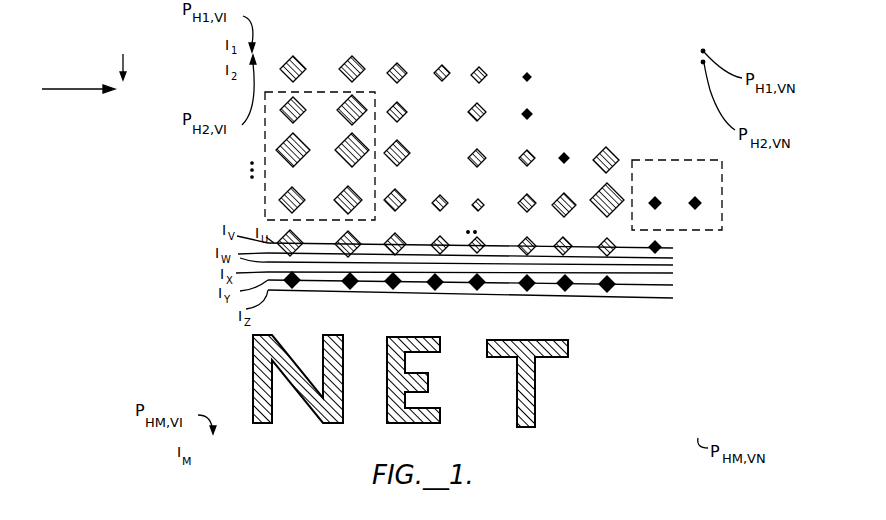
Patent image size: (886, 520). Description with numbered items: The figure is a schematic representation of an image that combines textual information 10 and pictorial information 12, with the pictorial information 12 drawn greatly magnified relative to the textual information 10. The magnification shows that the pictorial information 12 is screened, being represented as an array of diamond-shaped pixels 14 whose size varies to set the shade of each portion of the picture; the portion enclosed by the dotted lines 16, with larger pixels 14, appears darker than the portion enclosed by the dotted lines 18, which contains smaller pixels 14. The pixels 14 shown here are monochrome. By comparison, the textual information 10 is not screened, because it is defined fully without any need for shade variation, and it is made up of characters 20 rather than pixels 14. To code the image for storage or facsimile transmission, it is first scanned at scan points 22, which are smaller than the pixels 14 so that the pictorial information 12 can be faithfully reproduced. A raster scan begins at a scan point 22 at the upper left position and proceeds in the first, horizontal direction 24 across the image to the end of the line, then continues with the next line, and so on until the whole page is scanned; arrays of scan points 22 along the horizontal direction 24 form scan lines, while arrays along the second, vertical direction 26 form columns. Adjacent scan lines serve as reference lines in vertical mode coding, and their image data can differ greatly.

The textual information 10 is at (605, 388).
The pictorial information 12 is at (616, 125).
The pixels 14 is at (486, 73).
The dotted lines 16 is at (267, 218).
The dotted lines 18 is at (722, 203).
The characters 20 is at (533, 340).
The scan points 22 is at (489, 239).
The first direction 24 is at (70, 91).
The second direction 26 is at (125, 62).